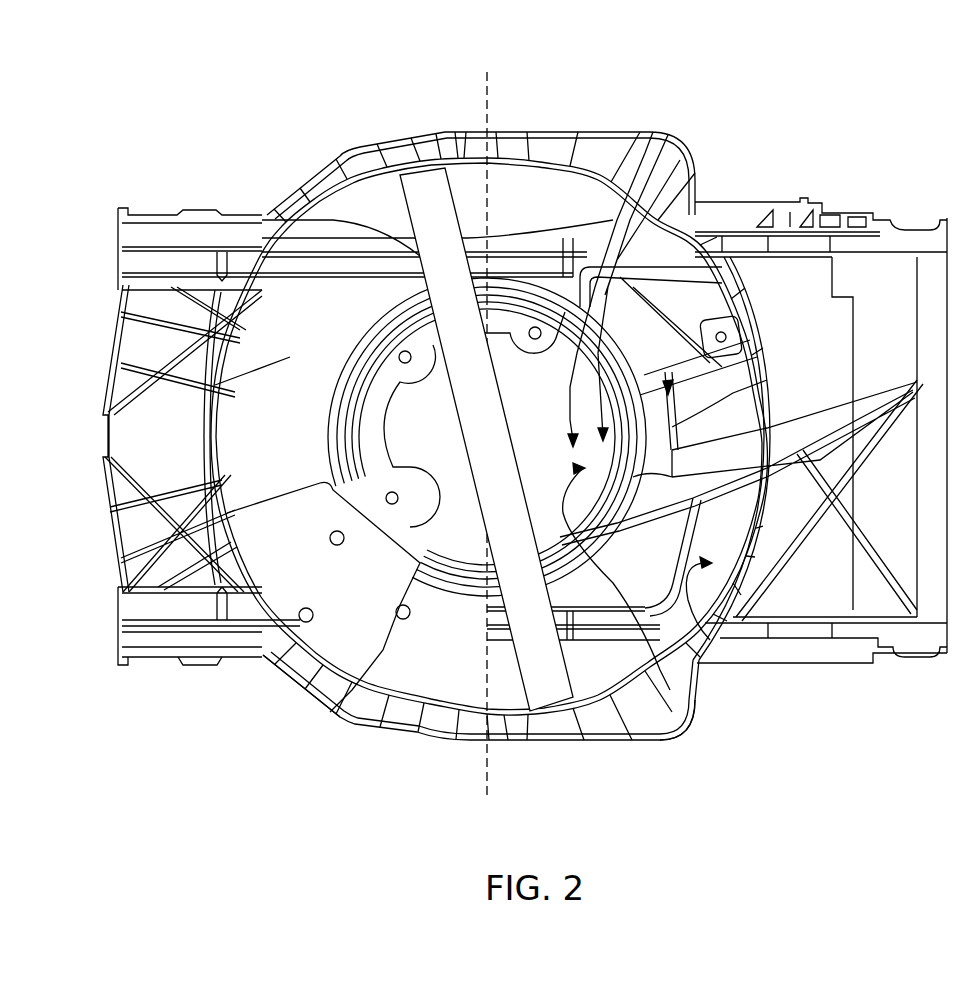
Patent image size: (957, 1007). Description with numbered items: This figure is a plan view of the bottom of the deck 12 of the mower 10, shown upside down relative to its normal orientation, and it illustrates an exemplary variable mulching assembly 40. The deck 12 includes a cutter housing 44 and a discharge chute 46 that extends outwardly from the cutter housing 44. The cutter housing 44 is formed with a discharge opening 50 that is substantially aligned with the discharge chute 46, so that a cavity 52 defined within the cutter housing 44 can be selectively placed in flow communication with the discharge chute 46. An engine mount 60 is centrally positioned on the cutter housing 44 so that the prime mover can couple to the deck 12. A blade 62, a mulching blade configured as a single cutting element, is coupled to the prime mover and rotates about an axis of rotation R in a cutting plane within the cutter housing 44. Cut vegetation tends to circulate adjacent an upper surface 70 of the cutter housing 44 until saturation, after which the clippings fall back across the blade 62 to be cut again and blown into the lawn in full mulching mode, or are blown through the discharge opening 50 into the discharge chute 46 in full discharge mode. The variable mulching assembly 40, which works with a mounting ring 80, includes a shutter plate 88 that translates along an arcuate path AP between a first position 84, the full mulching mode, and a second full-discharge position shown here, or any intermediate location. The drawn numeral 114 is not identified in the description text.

The mower 10 is at (887, 131).
The deck 12 is at (248, 152).
The variable mulching assembly 40 is at (680, 158).
The cutter housing 44 is at (261, 442).
The discharge chute 46 is at (842, 583).
The discharge opening 50 is at (713, 650).
The cavity 52 is at (268, 335).
The engine mount 60 is at (692, 197).
The blade 62 is at (437, 205).
The upper surface 70 is at (300, 468).
The mounting ring 80 is at (348, 703).
The first position 84 is at (683, 723).
The shutter plate 88 is at (698, 303).
The rib 114 is at (261, 373).
The arcuate path AP is at (762, 378).
The axis of rotation R is at (477, 421).